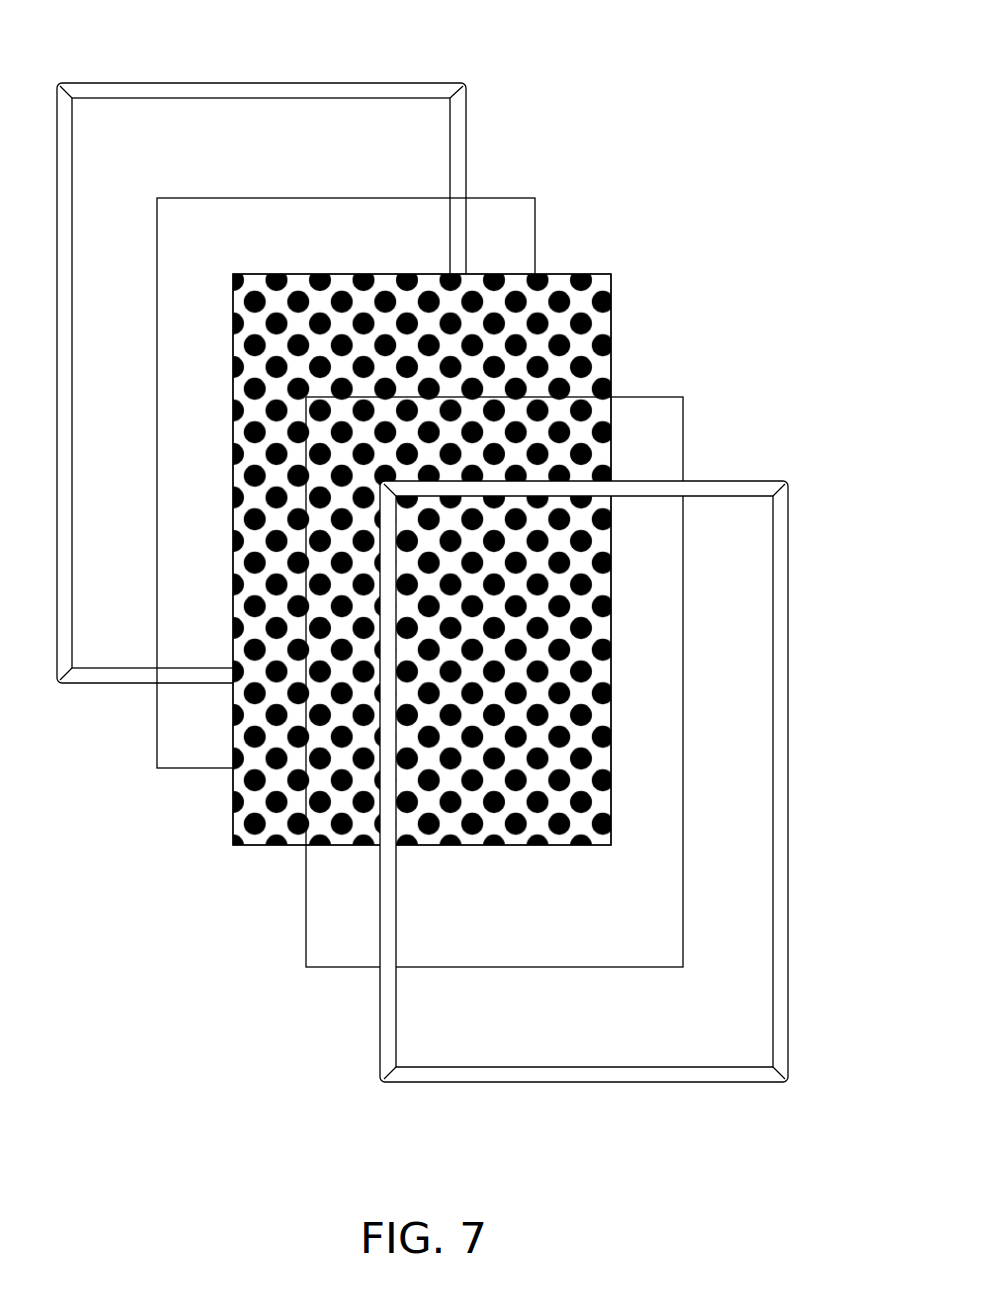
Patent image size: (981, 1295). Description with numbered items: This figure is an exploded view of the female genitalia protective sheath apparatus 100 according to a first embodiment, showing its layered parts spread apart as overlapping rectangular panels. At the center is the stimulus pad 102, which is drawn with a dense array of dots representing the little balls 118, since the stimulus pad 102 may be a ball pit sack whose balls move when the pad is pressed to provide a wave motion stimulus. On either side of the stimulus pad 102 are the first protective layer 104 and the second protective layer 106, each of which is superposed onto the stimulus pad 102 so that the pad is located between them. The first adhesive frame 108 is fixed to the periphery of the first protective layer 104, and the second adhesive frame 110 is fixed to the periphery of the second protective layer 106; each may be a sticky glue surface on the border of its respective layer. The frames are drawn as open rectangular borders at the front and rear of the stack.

The female genitalia protective sheath apparatus 100 is at (832, 19).
The stimulus pad 102 is at (436, 556).
The first protective layer 104 is at (545, 656).
The second protective layer 106 is at (397, 448).
The first adhesive frame 108 is at (635, 771).
The second adhesive frame 110 is at (314, 349).
The little balls 118 is at (258, 797).